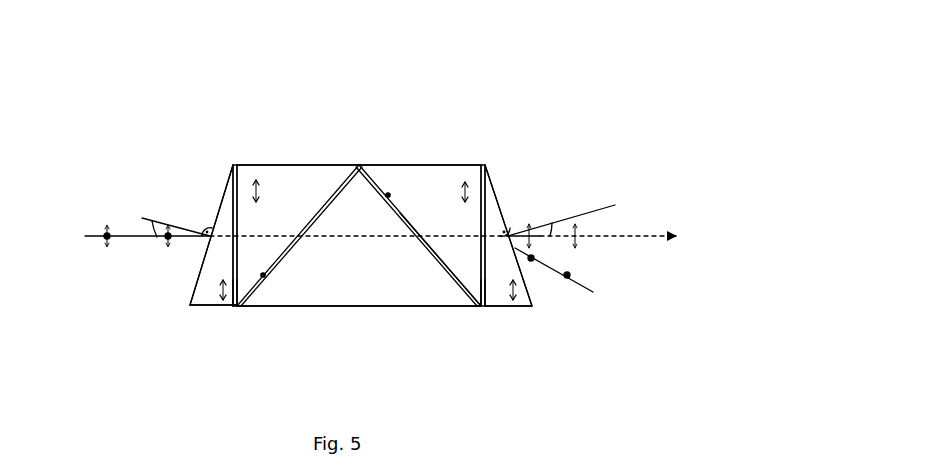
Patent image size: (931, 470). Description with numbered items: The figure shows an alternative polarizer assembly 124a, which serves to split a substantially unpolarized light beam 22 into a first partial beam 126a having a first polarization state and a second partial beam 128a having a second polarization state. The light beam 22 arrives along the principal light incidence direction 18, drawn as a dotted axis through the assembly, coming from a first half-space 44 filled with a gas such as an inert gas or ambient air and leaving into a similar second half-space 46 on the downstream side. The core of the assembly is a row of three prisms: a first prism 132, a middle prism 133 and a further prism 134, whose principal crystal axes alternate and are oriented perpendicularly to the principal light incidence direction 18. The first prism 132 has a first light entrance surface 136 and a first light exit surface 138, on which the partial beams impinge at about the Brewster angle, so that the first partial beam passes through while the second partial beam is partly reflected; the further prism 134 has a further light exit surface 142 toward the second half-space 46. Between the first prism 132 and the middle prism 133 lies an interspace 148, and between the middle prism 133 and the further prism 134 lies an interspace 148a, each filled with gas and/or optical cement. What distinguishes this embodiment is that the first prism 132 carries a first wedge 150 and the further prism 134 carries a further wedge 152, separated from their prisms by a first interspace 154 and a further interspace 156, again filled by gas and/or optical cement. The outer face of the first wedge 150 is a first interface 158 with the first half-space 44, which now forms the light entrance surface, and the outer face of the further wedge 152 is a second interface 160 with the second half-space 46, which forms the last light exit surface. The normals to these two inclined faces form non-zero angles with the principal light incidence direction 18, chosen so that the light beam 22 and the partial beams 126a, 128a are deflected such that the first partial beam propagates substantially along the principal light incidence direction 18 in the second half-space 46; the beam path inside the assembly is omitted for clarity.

The principal light incidence direction 18 is at (668, 236).
The light beam 22 is at (85, 236).
The first half-space 44 is at (148, 122).
The second half-space 46 is at (623, 155).
The polarizer assembly 124a is at (373, 99).
The first partial beam 126a is at (587, 232).
The second partial beam 128a is at (553, 270).
The first prism 132 is at (290, 182).
The prism 133 is at (290, 306).
The further prism 134 is at (450, 183).
The first light entrance surface 136 is at (256, 165).
The first light exit surface 138 is at (430, 257).
The further light exit surface 142 is at (478, 193).
The interspace 148 is at (263, 275).
The interspace 148a is at (388, 193).
The first wedge 150 is at (190, 305).
The further wedge 152 is at (498, 306).
The first interspace 154 is at (237, 306).
The further interspace 156 is at (483, 306).
The first interface 158 is at (221, 194).
The second interface 160 is at (527, 272).